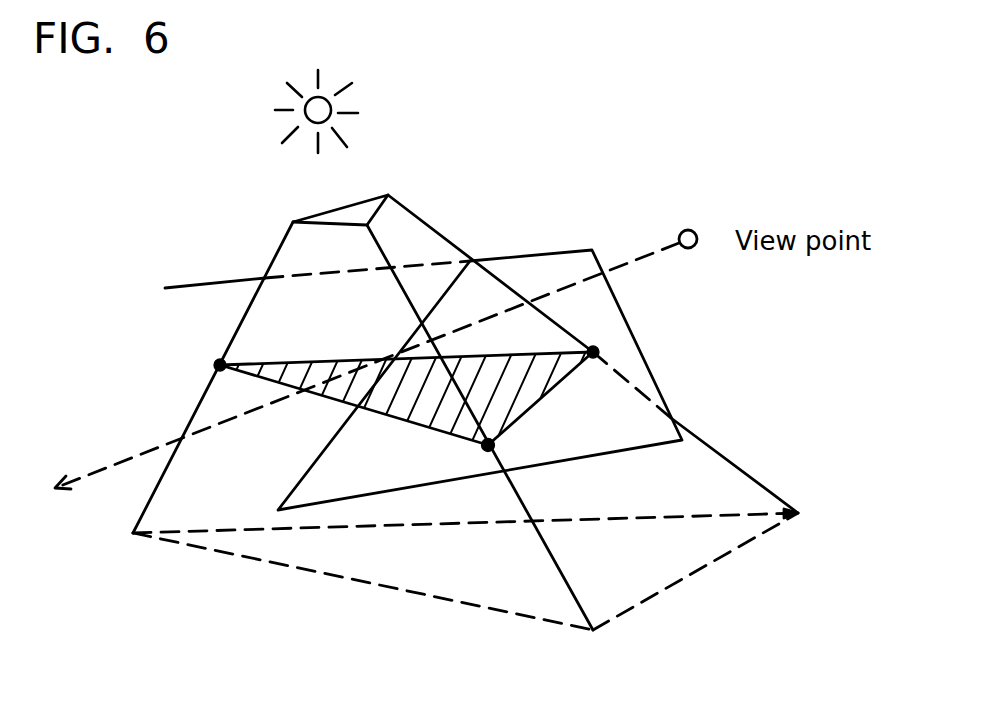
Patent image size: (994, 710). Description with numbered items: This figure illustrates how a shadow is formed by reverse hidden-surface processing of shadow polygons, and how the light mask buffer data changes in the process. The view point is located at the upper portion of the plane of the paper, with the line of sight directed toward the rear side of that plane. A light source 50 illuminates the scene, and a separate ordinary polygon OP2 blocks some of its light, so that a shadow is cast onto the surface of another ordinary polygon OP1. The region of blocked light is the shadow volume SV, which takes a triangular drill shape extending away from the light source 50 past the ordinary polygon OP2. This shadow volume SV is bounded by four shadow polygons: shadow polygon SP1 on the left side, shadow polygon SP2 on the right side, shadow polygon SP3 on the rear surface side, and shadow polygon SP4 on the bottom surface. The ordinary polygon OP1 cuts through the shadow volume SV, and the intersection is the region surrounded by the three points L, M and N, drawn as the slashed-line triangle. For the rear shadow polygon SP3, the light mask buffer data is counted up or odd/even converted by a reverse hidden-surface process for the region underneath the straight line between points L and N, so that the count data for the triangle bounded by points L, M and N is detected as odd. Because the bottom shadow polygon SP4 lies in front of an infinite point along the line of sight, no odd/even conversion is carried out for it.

The light source 50 is at (392, 96).
The ordinary polygon OP1 is at (555, 263).
The ordinary polygon OP2 is at (388, 195).
The shadow volume SV is at (440, 231).
The shadow polygon SP1 is at (458, 508).
The shadow polygon SP2 is at (673, 573).
The shadow polygon SP3 is at (675, 492).
The shadow polygon SP4 is at (327, 557).
The point L is at (215, 343).
The point M is at (510, 446).
The point N is at (600, 335).